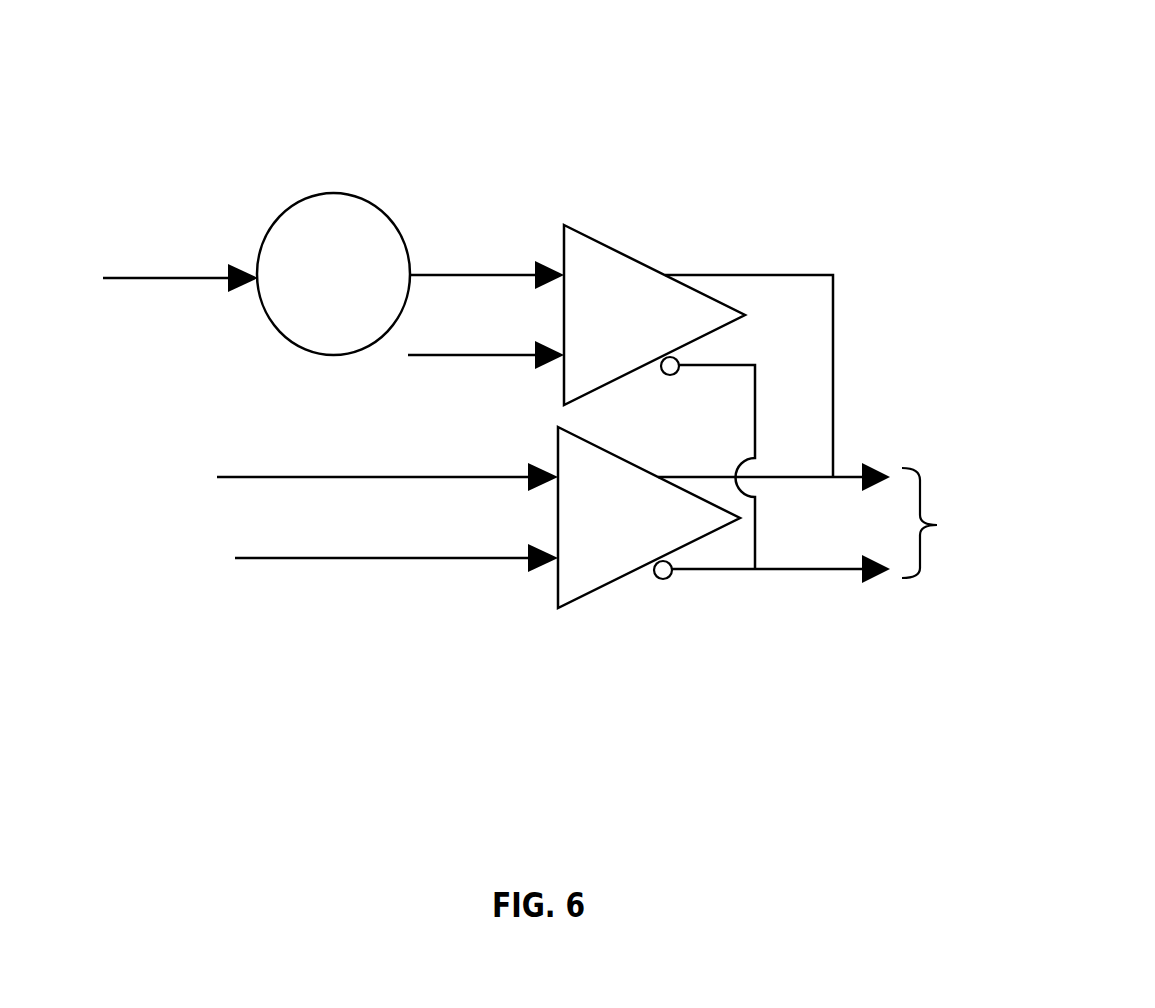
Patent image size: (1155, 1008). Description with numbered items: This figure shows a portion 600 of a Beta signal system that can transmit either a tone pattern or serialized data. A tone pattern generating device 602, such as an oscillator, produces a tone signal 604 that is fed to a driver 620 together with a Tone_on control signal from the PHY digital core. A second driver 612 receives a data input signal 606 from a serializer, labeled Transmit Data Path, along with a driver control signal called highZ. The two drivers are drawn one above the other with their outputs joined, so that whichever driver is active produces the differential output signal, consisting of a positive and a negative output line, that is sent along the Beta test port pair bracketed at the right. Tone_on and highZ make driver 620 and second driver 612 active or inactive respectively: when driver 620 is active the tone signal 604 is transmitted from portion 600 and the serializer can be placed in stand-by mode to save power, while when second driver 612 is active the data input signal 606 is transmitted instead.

The portion of a Beta signal system 600 is at (1067, 73).
The tone pattern generating device 602 is at (375, 208).
The tone signal 604 is at (435, 272).
The data input signal 606 is at (320, 478).
The second driver 612 is at (602, 583).
The driver 620 is at (602, 240).